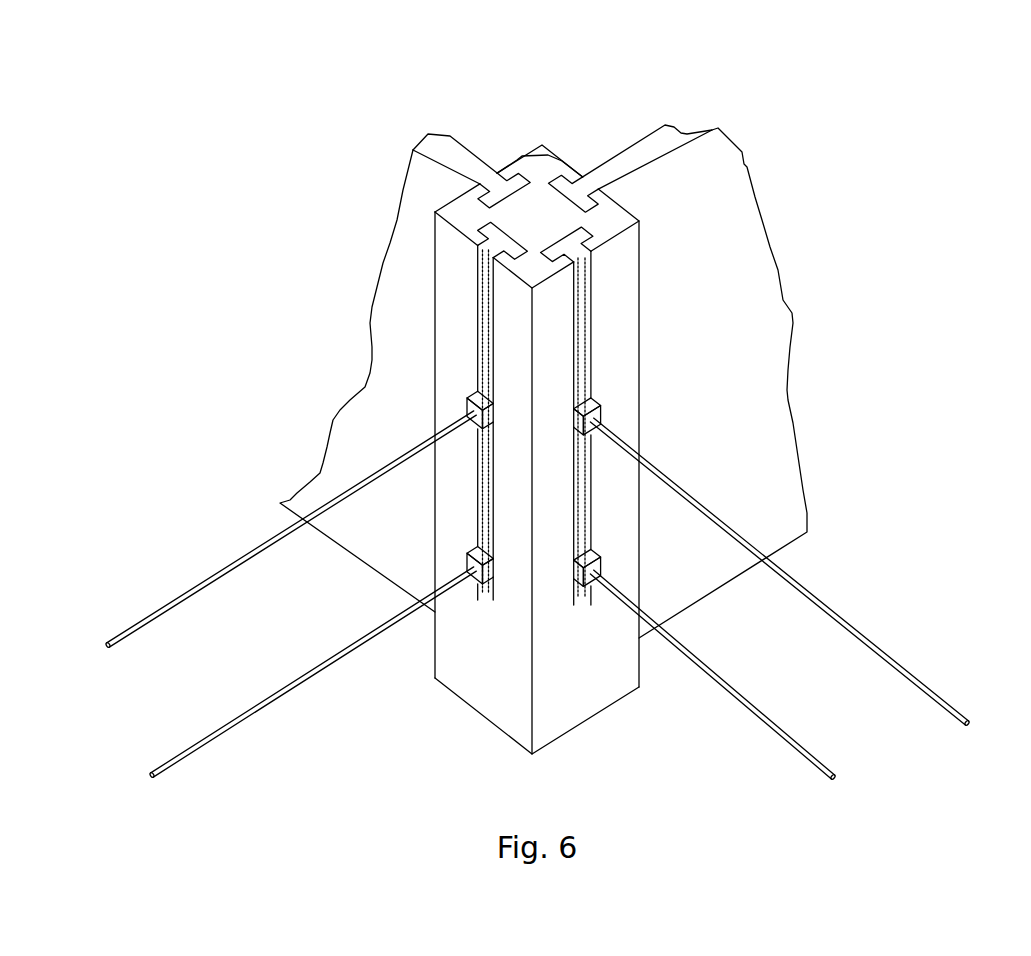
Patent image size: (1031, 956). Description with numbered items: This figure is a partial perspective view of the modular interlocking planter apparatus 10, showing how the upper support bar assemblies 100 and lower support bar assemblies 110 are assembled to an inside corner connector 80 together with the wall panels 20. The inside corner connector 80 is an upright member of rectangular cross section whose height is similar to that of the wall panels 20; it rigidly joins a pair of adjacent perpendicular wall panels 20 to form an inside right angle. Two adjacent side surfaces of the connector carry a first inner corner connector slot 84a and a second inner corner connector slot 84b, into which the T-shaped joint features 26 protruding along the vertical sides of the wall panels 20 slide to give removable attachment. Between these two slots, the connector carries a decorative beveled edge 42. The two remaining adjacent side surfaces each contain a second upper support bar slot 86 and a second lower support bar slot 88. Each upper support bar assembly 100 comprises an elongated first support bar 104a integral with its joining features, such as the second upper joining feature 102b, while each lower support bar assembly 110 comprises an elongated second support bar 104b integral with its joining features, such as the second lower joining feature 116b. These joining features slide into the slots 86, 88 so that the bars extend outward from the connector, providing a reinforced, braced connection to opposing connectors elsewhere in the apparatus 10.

The apparatus 10 is at (126, 185).
The wall panel 20 is at (423, 177).
The joint feature 26 is at (548, 172).
The decorative beveled edge 42 is at (548, 152).
The inside corner connector 80 is at (571, 165).
The first inner corner connector slot 84a is at (492, 188).
The second inner corner connector slot 84b is at (670, 123).
The second upper support bar slot 86 is at (492, 245).
The second lower support bar slot 88 is at (490, 513).
The upper support bar assembly 100 is at (136, 587).
The second upper joining feature 102b is at (458, 468).
The first support bar 104a is at (263, 545).
The second support bar 104b is at (263, 703).
The lower support bar assembly 110 is at (170, 727).
The second lower joining feature 116b is at (486, 575).